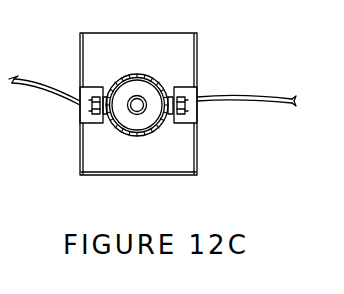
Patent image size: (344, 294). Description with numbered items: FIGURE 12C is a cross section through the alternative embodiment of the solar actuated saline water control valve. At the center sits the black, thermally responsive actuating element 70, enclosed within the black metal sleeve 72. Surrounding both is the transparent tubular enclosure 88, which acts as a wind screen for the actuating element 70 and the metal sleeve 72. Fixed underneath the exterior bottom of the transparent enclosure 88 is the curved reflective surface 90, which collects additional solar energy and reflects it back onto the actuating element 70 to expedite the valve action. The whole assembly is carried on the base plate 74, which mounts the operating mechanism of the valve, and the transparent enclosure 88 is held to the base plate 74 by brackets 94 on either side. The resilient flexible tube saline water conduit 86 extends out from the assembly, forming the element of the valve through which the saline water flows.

The base plate 74 is at (93, 32).
The transparent enclosure 88 is at (158, 77).
The black metal sleeve 72 is at (142, 114).
The thermally responsive actuating element 70 is at (133, 115).
The reflective surface 90 is at (158, 126).
The brackets 94 is at (82, 87).
The resilient flexible tube saline water conduit 86 is at (250, 103).